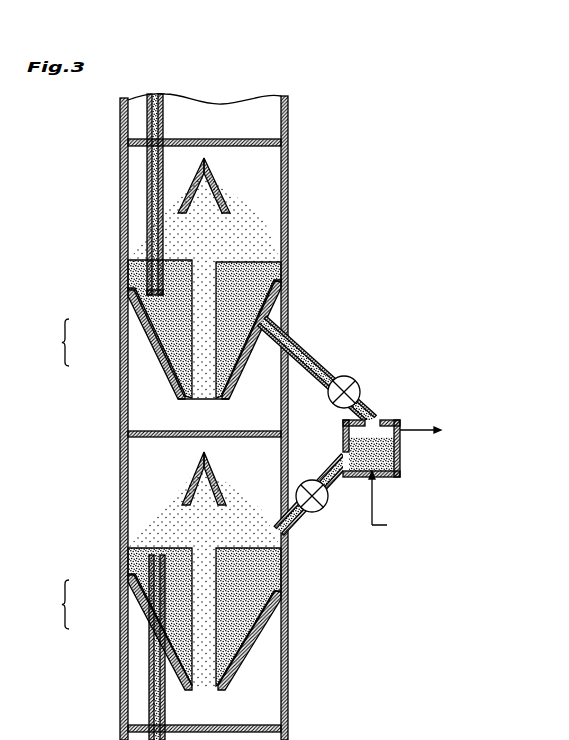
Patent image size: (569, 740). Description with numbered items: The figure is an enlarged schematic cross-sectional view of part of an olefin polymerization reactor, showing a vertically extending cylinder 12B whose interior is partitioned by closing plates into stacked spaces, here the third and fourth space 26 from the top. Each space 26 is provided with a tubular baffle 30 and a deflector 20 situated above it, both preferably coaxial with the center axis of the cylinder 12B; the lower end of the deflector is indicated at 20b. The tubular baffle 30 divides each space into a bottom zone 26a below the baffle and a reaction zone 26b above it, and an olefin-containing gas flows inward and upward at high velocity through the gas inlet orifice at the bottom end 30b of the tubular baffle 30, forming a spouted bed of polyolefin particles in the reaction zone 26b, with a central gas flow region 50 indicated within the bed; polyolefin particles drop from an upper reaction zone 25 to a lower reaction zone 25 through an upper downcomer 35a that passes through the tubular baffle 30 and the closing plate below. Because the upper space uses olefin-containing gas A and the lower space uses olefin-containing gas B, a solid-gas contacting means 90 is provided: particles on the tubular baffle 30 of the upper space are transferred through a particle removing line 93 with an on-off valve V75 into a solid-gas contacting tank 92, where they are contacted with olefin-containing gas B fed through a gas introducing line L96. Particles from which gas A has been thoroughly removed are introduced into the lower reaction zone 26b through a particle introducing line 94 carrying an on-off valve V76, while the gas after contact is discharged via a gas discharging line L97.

The cylinder 12B is at (120, 176).
The deflector 20 is at (185, 181).
The lower end of conical deflector 20b is at (229, 508).
The upper downcomer 35a is at (147, 219).
The reaction zone 25 is at (253, 290).
The space 26 is at (49, 474).
The bottom zone 26a is at (141, 348).
The reaction zone 26b is at (147, 329).
The tubular baffle 30 is at (252, 357).
The bottom end of tubular baffle 30b is at (183, 397).
The central gas flow channel (spout) 50 is at (198, 385).
The solid-gas contacting means 90 is at (380, 431).
The particle removing line 93 is at (308, 344).
The particle introducing line 94 is at (336, 482).
The on-off valve V75 is at (348, 377).
The on-off valve V76 is at (313, 513).
The solid-gas contacting tank 92 is at (401, 464).
The gas discharging line L97 is at (420, 429).
The gas introducing line L96 is at (376, 509).